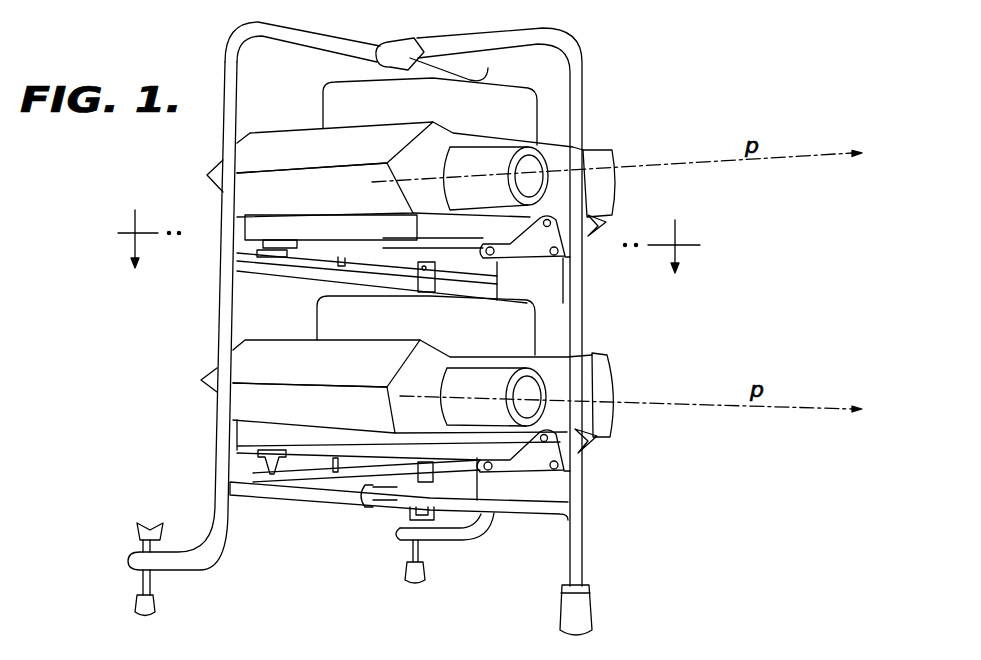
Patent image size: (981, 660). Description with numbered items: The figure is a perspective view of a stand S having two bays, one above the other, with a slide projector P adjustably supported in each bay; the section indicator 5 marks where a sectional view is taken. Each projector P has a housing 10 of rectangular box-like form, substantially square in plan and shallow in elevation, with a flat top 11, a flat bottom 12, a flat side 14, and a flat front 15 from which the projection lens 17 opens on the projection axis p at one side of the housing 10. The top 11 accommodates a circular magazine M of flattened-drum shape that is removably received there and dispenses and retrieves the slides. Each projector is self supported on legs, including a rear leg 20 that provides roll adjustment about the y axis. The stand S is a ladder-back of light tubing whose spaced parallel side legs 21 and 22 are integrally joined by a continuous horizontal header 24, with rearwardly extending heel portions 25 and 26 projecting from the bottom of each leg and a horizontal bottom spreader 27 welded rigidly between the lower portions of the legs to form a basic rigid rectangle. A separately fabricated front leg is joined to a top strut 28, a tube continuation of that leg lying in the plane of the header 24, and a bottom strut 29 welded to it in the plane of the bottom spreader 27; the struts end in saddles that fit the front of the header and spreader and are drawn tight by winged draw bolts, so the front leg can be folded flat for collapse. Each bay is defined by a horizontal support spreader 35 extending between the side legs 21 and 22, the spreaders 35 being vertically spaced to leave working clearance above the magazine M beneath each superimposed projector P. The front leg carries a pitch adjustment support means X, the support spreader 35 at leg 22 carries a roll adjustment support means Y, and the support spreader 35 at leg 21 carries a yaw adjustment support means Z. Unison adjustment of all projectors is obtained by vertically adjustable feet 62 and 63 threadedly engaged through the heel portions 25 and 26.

The stand S is at (591, 50).
The circular magazine M is at (427, 216).
The projector P is at (622, 145).
The pitch adjustment support means X is at (578, 254).
The roll adjustment support means Y is at (245, 248).
The yaw adjustment support means Z is at (412, 295).
The section line for FIG. 5 is at (407, 235).
The housing 10 is at (412, 286).
The flat top 11 is at (560, 145).
The flat bottom 12 is at (327, 240).
The flat side 14 is at (250, 228).
The flat front side 15 is at (598, 184).
The projection lens 17 is at (490, 156).
The rear leg 20 is at (280, 252).
The side leg 21 is at (497, 288).
The side leg 22 is at (225, 288).
The horizontal header 24 is at (333, 40).
The heel portion 25 is at (448, 544).
The heel portion 26 is at (177, 574).
The horizontal bottom spreader 27 is at (267, 503).
The top strut 28 is at (487, 43).
The bottom strut 29 is at (538, 507).
The support spreader 35 is at (480, 273).
The vertically adjustable foot 62 is at (412, 584).
The vertically adjustable foot 63 is at (149, 616).